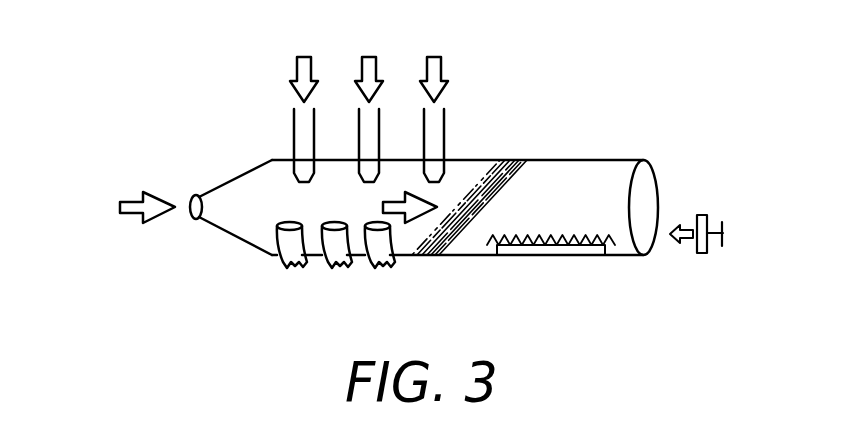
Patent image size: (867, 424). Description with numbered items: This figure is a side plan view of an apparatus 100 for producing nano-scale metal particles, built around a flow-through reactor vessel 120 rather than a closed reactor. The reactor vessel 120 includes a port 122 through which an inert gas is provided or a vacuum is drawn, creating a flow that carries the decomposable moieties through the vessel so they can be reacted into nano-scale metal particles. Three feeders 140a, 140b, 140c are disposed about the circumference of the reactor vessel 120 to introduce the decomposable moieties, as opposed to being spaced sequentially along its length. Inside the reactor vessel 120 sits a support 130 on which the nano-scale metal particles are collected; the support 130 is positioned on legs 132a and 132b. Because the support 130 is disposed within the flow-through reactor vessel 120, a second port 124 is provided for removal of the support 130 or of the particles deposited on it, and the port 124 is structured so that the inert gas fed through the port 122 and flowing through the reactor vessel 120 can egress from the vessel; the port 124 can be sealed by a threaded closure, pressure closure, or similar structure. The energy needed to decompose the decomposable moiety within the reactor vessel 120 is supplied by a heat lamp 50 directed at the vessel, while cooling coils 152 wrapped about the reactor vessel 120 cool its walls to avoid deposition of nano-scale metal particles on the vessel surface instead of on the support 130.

The apparatus 100 is at (160, 95).
The flow-through reactor vessel 120 is at (543, 160).
The port 122 is at (196, 195).
The port 124 is at (642, 161).
The support 130 is at (575, 245).
The leg 132a is at (496, 250).
The leg 132b is at (612, 253).
The feeder 140a is at (293, 129).
The feeder 140b is at (358, 123).
The feeder 140c is at (445, 128).
The cooling coils 152 is at (382, 267).
The heat lamp 50 is at (701, 253).